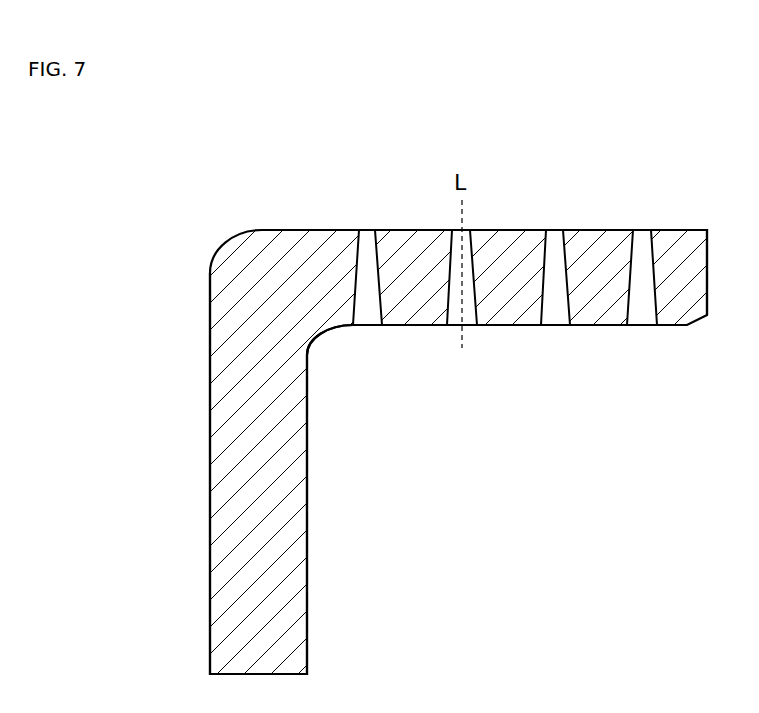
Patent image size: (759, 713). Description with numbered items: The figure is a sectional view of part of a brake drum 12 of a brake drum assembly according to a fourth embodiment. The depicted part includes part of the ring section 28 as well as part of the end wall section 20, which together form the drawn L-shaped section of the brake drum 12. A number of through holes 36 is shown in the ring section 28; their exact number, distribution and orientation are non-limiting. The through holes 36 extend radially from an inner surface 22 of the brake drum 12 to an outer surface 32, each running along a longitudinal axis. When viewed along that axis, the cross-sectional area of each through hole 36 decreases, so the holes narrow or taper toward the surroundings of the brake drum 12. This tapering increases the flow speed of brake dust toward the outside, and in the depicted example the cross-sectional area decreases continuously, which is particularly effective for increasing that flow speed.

The brake drum 12 is at (686, 326).
The end wall section 20 is at (218, 462).
The inner surface 22 is at (333, 336).
The ring section 28 is at (317, 230).
The outer surface 32 is at (680, 230).
The through holes 36 is at (368, 315).